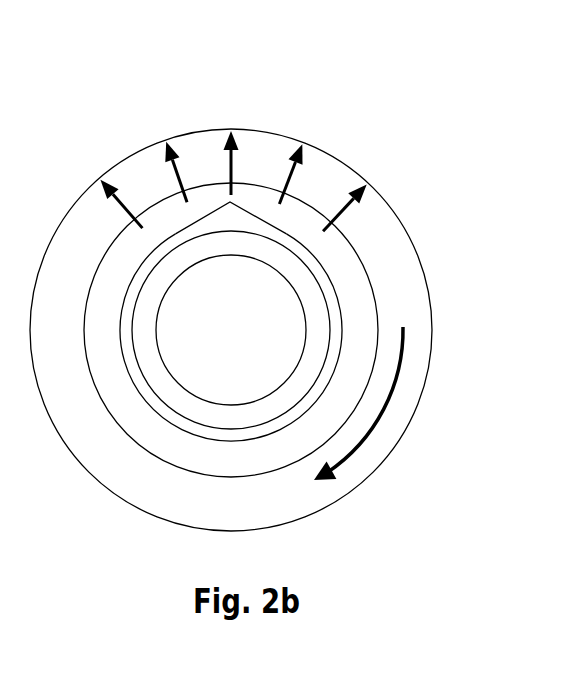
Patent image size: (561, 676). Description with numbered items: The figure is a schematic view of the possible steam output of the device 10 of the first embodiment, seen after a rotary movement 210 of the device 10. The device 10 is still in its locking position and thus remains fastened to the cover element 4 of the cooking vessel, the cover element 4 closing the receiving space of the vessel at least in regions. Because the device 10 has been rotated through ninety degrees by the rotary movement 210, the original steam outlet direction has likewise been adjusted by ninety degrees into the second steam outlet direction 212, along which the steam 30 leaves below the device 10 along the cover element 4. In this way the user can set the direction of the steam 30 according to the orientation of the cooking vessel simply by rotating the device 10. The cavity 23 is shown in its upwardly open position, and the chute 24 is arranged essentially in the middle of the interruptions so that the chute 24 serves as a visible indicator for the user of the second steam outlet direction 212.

The cover element 4 is at (85, 238).
The device 10 is at (343, 330).
The cavity 23 is at (304, 281).
The chute 24 is at (230, 208).
The steam 30 is at (236, 158).
The rotary movement 210 is at (353, 447).
The second steam outlet direction 212 is at (171, 123).